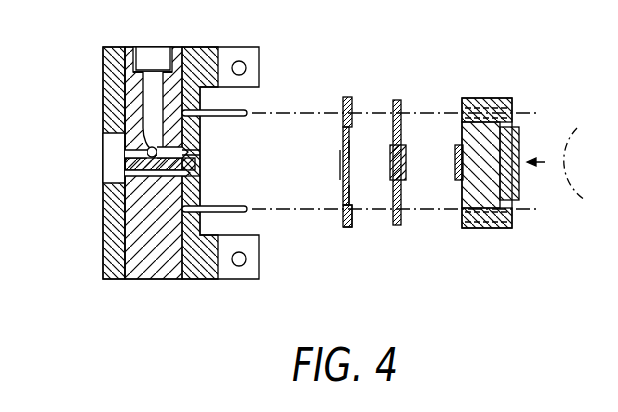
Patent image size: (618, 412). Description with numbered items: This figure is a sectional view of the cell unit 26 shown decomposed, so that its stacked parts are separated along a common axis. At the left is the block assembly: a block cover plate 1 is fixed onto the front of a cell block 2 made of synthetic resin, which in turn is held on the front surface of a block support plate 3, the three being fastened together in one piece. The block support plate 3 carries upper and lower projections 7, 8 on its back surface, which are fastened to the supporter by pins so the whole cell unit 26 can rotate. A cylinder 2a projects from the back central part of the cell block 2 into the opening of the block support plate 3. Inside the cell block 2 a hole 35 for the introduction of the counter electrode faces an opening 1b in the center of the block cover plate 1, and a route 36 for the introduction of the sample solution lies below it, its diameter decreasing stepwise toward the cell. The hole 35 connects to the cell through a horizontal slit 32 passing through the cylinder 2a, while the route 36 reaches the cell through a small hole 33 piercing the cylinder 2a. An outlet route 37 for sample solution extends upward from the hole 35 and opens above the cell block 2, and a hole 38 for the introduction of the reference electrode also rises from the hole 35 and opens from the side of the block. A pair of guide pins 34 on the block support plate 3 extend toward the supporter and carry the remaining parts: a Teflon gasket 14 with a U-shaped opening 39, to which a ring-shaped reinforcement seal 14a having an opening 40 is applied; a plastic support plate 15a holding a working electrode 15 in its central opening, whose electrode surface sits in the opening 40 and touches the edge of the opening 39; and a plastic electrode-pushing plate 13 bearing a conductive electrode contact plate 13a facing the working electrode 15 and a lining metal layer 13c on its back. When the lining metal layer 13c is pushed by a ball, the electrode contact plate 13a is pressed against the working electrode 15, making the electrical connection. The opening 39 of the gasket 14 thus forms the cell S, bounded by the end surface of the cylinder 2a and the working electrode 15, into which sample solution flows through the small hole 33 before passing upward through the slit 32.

The block cover plate 1 is at (108, 216).
The opening 1b is at (125, 143).
The cell block 2 is at (142, 245).
The cylinder 2a is at (200, 138).
The block support plate 3 is at (203, 63).
The projection 7 is at (252, 58).
The projection 8 is at (247, 273).
The electrode-pushing plate 13 is at (497, 100).
The electrode contact plate 13a is at (458, 145).
The lining metal layer 13c is at (520, 145).
The gasket 14 is at (346, 100).
The ring-shaped reinforcement seal 14a is at (350, 226).
The working electrode 15 is at (407, 160).
The support plate 15a is at (398, 100).
The cell unit 26 is at (98, 93).
The slit 32 is at (200, 160).
The small hole 33 is at (200, 188).
The guide pins 34 is at (247, 117).
The hole for the introduction of the counter electrode 35 is at (127, 152).
The route for the introduction of the sample solution 36 is at (127, 173).
The outlet route for sample solution 37 is at (156, 82).
The hole for the introduction of the reference electrode 38 is at (149, 148).
The U-shaped opening 39 is at (352, 152).
The opening 40 is at (353, 200).
The cell S is at (343, 166).